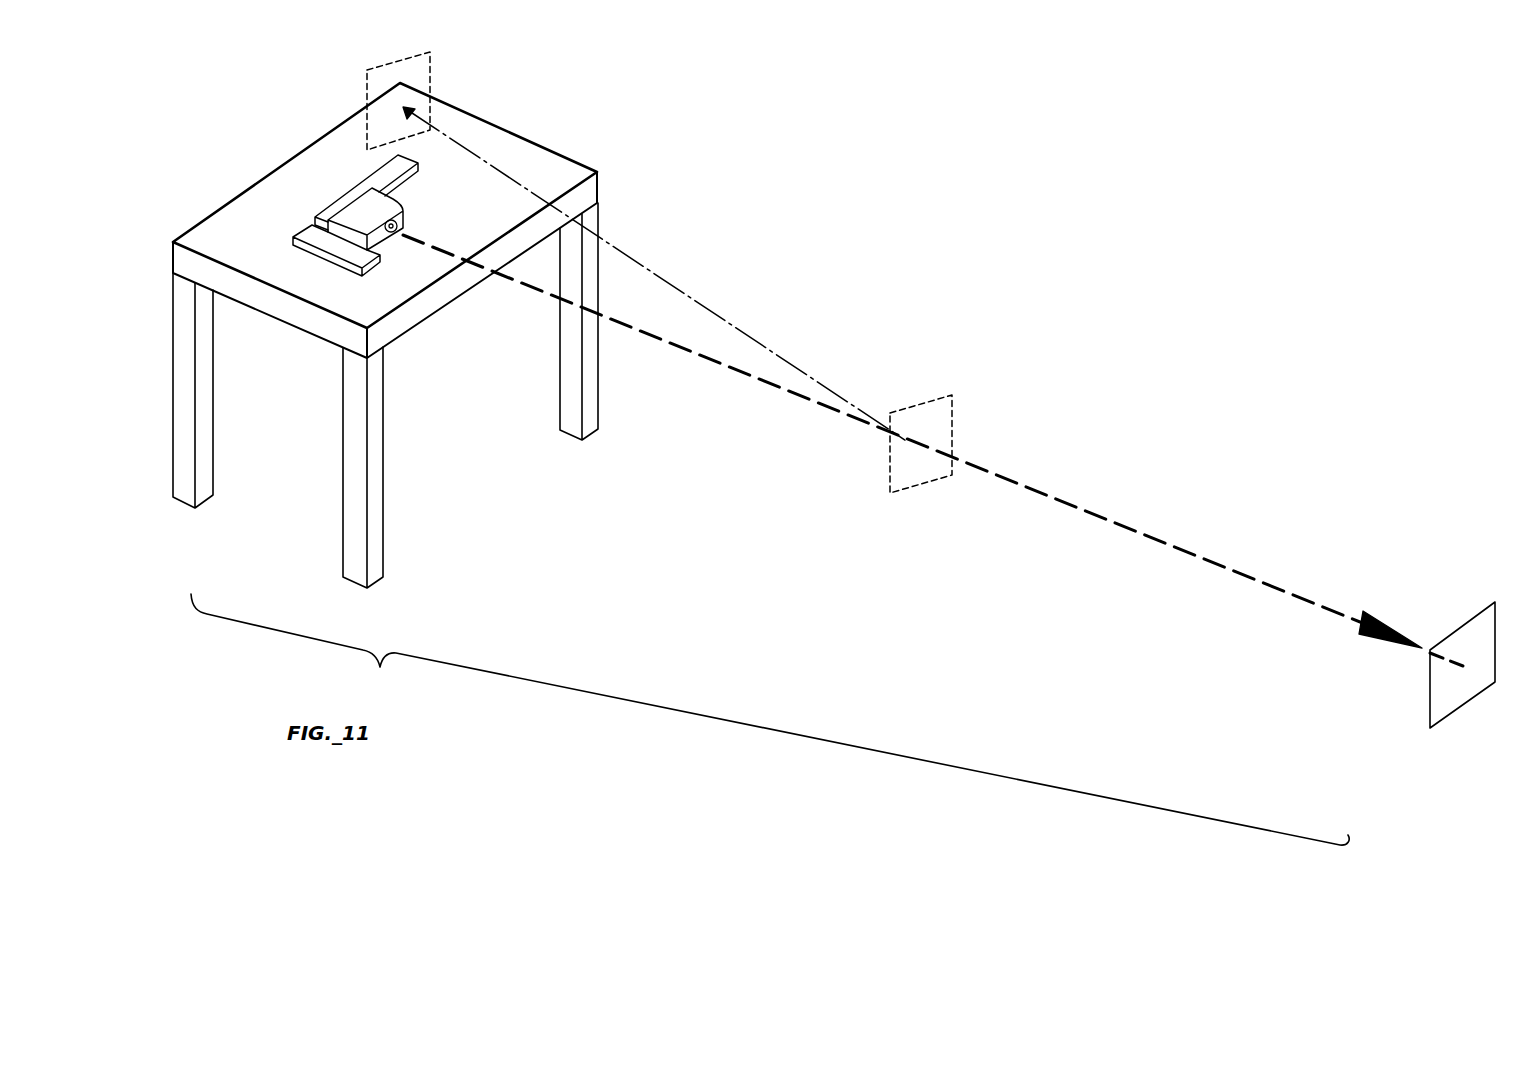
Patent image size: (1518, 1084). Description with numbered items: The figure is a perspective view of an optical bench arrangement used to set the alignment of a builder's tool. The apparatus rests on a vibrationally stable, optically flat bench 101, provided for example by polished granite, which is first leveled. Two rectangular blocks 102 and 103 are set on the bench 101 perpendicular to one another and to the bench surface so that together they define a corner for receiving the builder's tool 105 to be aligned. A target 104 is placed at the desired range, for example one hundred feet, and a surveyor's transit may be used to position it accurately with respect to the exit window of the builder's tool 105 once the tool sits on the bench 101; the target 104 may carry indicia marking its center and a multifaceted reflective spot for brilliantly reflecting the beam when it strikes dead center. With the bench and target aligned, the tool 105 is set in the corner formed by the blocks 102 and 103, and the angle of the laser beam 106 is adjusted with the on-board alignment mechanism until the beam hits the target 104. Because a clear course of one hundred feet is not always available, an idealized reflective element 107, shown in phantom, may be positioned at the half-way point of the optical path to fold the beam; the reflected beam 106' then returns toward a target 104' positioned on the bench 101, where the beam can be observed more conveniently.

The bench 101 is at (540, 144).
The rectangular block 102 is at (390, 178).
The rectangular block 103 is at (315, 242).
The target 104 is at (1471, 648).
The target 104' is at (442, 99).
The builder's tool 105 is at (400, 193).
The laser beam 106 is at (933, 450).
The reflected laser beam 106' is at (657, 275).
The reflective element 107 is at (893, 495).